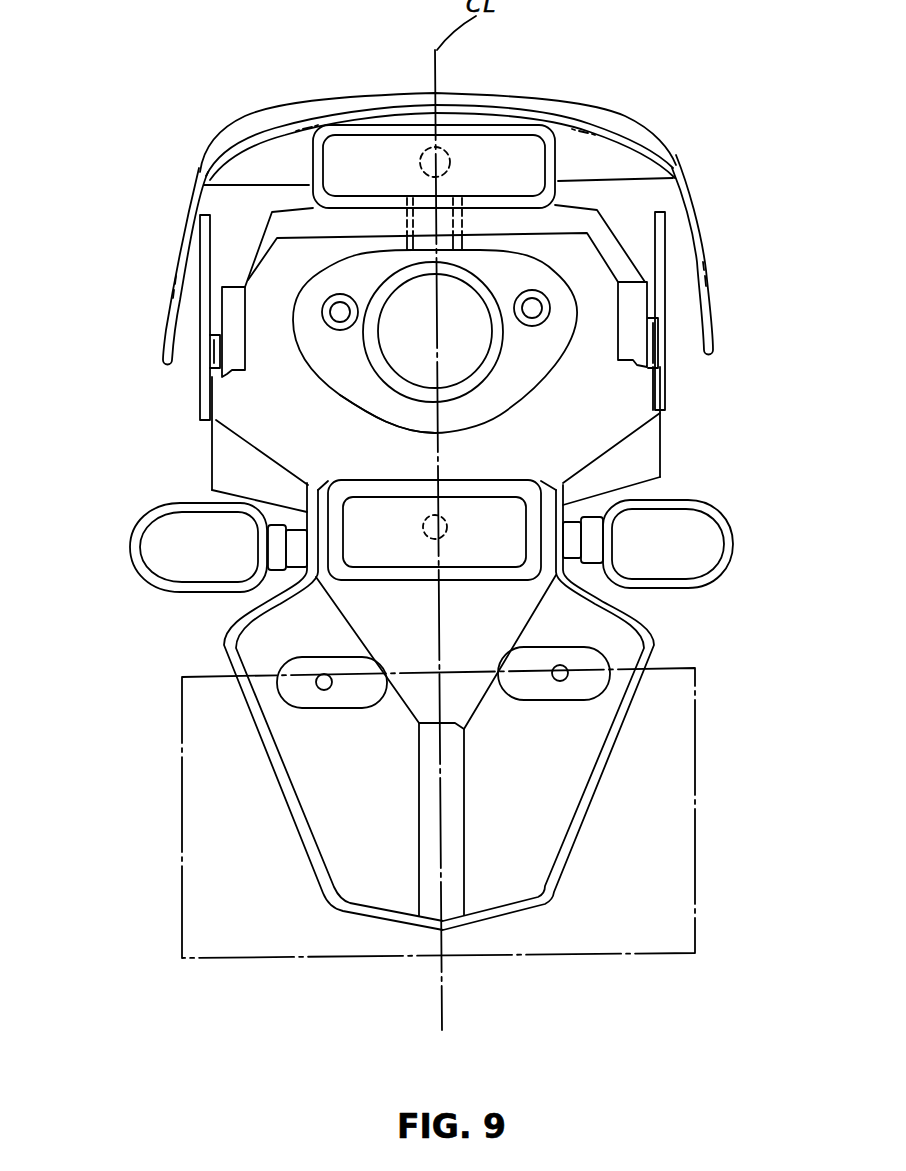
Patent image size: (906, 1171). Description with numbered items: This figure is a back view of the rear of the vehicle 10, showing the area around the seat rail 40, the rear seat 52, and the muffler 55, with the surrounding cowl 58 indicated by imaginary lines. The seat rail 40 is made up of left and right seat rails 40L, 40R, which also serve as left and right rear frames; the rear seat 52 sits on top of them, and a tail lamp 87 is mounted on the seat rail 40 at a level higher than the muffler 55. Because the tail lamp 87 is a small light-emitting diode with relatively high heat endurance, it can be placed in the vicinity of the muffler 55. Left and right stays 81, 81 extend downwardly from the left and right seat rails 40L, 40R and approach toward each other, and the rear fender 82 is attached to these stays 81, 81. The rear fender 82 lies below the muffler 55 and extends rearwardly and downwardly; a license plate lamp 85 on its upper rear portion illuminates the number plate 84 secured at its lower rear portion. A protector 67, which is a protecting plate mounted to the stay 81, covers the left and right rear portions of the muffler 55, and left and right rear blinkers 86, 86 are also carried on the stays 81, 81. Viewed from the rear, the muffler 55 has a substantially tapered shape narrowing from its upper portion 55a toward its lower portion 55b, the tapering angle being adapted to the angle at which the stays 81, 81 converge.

The motorcycle 10 is at (146, 95).
The rear seat 52 is at (603, 115).
The cowl 58 is at (688, 193).
The tail lamp 87 is at (368, 148).
The protector 67 is at (198, 244).
The seat rail 40 is at (196, 327).
The left seat rail 40L is at (230, 307).
The right seat rail 40R is at (644, 310).
The muffler 55 is at (572, 379).
The upper portion 55a is at (310, 310).
The lower portion 55b is at (398, 413).
The stay 81 is at (212, 447).
The license plate lamp 85 is at (408, 552).
The rear blinker 86 is at (153, 543).
The rear fender 82 is at (498, 887).
The number plate 84 is at (657, 953).